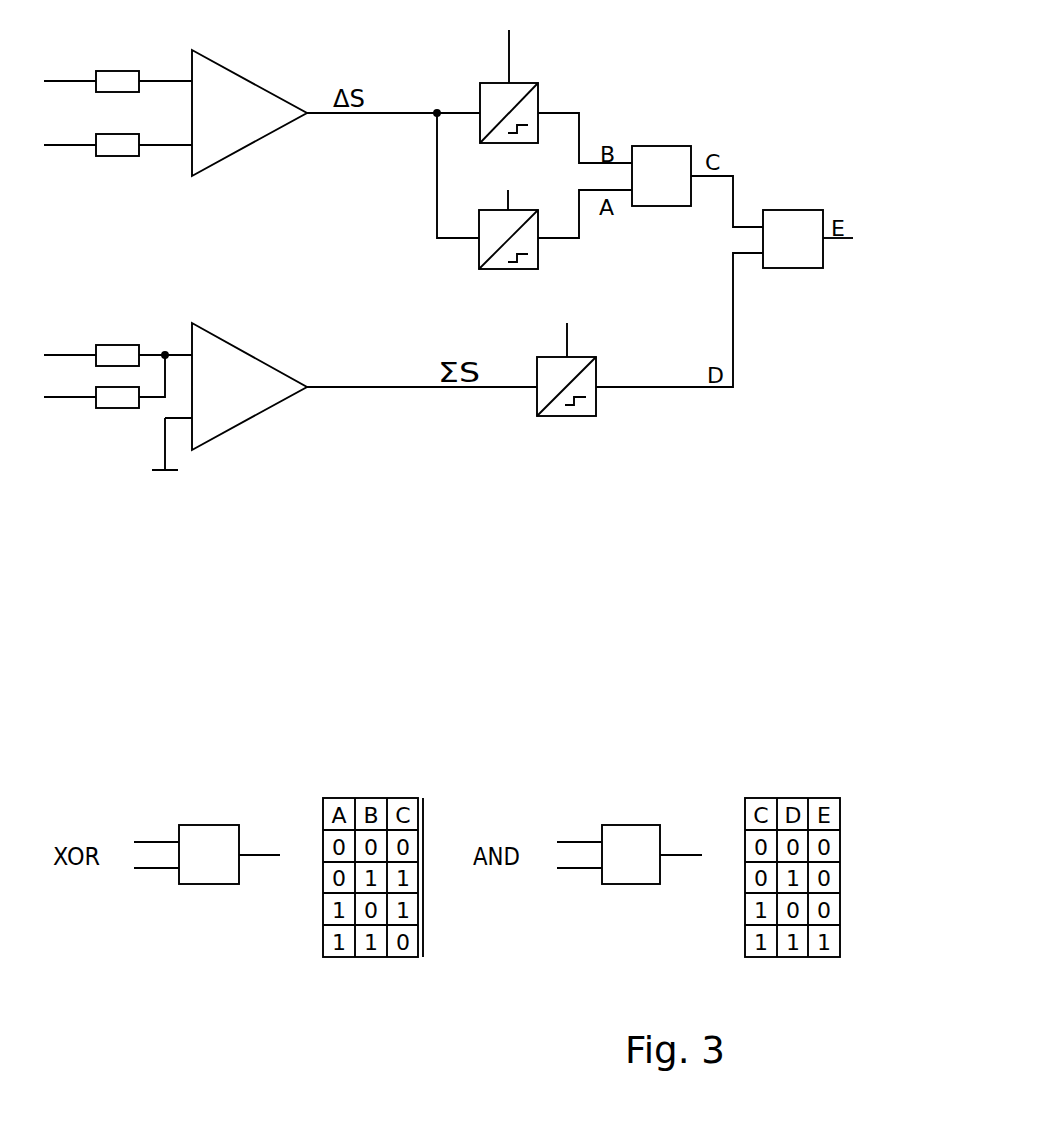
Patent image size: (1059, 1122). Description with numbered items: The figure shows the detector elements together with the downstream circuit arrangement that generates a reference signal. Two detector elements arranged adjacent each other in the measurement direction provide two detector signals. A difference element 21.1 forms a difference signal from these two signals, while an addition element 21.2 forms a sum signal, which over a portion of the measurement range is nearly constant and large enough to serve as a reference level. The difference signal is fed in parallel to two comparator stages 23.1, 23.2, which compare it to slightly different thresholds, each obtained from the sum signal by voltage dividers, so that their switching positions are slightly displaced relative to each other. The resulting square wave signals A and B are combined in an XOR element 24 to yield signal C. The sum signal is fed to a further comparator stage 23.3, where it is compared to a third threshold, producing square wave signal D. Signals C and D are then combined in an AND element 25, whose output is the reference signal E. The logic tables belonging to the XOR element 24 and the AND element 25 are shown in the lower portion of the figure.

The difference element 21.1 is at (252, 92).
The addition element 21.2 is at (252, 364).
The comparator stage 23.1 is at (523, 93).
The comparator stage 23.2 is at (500, 263).
The further comparator stage 23.3 is at (555, 408).
The XOR element 24 is at (664, 196).
The AND element 25 is at (797, 256).